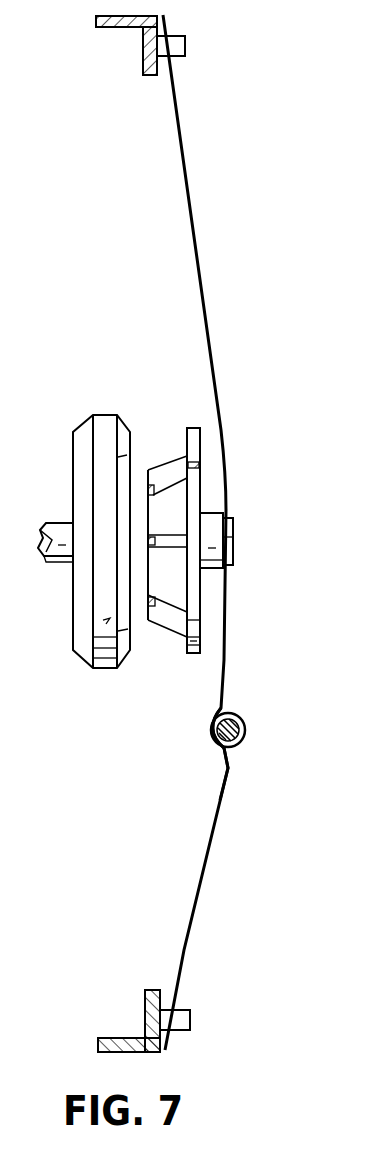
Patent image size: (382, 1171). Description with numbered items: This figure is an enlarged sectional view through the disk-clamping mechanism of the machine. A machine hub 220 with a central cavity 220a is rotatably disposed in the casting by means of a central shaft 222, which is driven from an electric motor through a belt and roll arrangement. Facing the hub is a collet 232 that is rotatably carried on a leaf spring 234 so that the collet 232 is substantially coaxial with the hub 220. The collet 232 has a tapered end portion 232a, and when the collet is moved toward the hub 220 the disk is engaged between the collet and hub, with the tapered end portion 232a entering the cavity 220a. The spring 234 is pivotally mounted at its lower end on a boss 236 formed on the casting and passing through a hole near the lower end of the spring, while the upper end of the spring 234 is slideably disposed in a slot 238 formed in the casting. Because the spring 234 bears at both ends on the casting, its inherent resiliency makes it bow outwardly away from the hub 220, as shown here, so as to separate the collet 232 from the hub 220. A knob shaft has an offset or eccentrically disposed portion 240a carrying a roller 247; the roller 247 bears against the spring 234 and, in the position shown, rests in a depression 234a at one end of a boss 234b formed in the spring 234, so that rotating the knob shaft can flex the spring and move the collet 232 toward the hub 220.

The machine hub 220 is at (108, 413).
The central cavity 220a is at (100, 466).
The central shaft 222 is at (55, 522).
The collet 232 is at (193, 654).
The tapered end portion 232a is at (165, 626).
The leaf spring 234 is at (197, 246).
The depression 234a is at (210, 741).
The boss 234b is at (233, 768).
The boss 236 is at (191, 1018).
The slot 238 is at (186, 44).
The eccentrically disposed portion 240a is at (246, 727).
The roller 247 is at (238, 716).